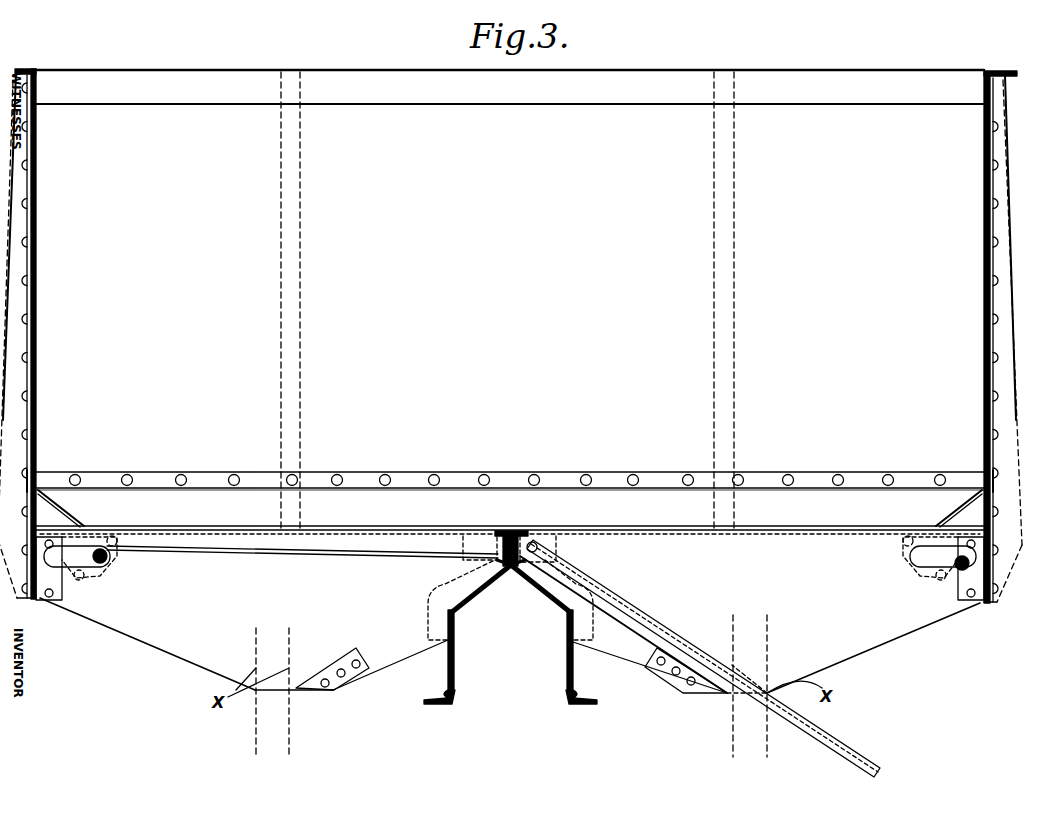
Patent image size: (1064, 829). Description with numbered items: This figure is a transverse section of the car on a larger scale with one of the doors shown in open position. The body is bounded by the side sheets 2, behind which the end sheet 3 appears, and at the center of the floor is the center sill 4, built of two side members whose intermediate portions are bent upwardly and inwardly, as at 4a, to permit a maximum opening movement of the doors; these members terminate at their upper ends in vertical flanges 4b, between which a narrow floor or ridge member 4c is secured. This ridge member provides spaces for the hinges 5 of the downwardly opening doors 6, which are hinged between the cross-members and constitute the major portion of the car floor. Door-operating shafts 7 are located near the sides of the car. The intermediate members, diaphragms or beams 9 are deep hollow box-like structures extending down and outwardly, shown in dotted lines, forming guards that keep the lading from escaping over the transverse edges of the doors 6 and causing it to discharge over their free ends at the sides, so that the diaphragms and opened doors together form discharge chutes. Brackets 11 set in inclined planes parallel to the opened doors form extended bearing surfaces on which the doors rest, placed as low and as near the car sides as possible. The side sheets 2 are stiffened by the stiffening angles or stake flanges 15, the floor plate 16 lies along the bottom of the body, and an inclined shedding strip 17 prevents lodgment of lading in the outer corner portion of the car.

The side sheet 2 is at (37, 321).
The end sheet 3 is at (510, 300).
The center sill 4 is at (456, 666).
The upwardly and inwardly bent portion 4a is at (478, 589).
The vertical flange 4b is at (497, 561).
The floor or ridge member 4c is at (512, 526).
The hinge 5 is at (534, 542).
The door 6 is at (301, 554).
The door-operating shaft 7 is at (100, 560).
The intermediate member, diaphragm or beam 9 is at (520, 671).
The bracket 11 is at (352, 678).
The stiffening angle or stake flange 15 is at (508, 471).
The floor plate 16 is at (510, 522).
The inclined shedding strip 17 is at (60, 513).